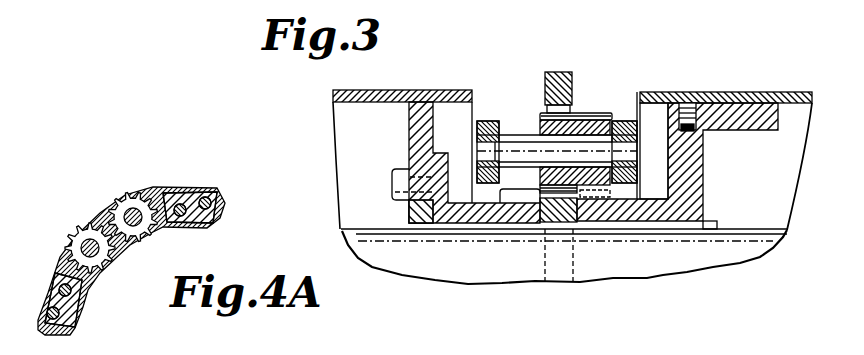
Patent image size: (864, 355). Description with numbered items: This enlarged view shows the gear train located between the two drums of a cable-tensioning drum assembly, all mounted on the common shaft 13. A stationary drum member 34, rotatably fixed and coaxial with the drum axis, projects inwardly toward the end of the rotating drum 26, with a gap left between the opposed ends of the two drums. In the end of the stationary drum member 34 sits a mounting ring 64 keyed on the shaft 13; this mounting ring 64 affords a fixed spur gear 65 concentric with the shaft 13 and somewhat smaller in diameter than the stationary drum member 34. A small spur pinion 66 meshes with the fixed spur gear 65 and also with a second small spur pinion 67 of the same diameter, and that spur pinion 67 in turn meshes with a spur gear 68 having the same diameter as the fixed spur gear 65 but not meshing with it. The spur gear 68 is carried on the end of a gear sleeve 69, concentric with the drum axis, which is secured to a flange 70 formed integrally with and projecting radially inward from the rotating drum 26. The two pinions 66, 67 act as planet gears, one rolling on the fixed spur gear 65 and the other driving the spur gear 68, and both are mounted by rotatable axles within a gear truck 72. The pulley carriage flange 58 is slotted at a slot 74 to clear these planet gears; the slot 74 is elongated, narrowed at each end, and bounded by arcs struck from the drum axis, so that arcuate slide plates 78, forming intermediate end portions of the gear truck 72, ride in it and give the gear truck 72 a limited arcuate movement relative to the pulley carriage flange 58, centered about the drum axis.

In FIG. 3, the shaft 13 is at (413, 268).
In FIG. 3, the rotating drum 26 is at (388, 89).
In FIG. 3, the stationary drum member 34 is at (750, 92).
In FIG. 3, the pulley carriage flange 58 is at (573, 84).
In FIG. 3, the mounting ring 64 is at (697, 193).
In FIG. 3, the fixed spur gear 65 is at (600, 205).
In FIG. 3, the spur pinion 66 is at (638, 122).
In FIG. 4A, the spur pinion 66 is at (137, 192).
In FIG. 4A, the spur pinion 67 is at (86, 223).
In FIG. 3, the spur gear 68 is at (510, 189).
In FIG. 3, the gear sleeve 69 is at (457, 225).
In FIG. 3, the flange 70 is at (410, 127).
In FIG. 3, the gear truck 72 is at (679, 96).
In FIG. 4A, the gear truck 72 is at (93, 308).
In FIG. 3, the slot 74 is at (572, 110).
In FIG. 4A, the arcuate slide plates 78 is at (200, 192).